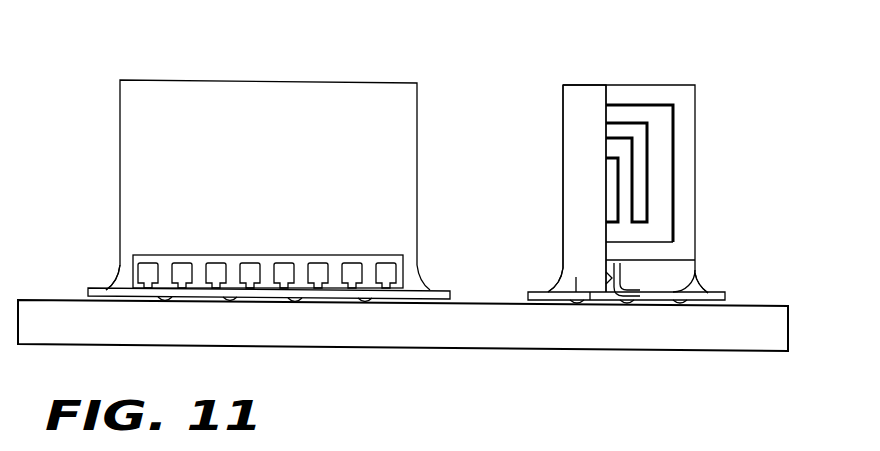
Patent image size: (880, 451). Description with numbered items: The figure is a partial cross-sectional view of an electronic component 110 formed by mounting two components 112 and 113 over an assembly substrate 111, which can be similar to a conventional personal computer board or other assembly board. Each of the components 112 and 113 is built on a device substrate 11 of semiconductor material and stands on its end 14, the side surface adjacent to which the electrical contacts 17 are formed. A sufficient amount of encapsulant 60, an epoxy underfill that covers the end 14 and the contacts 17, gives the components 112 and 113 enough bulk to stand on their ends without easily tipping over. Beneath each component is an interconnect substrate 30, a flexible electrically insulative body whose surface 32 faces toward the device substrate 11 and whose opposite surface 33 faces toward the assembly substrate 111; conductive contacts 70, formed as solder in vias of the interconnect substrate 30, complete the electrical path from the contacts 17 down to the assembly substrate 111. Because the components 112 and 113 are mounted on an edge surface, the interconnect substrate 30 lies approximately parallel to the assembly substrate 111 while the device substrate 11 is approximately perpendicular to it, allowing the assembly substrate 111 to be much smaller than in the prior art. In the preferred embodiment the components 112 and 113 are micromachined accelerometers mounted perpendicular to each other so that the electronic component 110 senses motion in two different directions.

The device substrate 11 is at (570, 111).
The end 14 is at (562, 268).
The electrical contacts 17 is at (603, 277).
The interconnect substrate 30 is at (695, 273).
The surface 32 is at (722, 290).
The surface 33 is at (718, 302).
The encapsulant 60 is at (652, 265).
The conductive contacts 70 is at (626, 305).
The electronic component 110 is at (407, 378).
The assembly substrate 111 is at (517, 340).
The component 112 is at (136, 53).
The component 113 is at (730, 119).